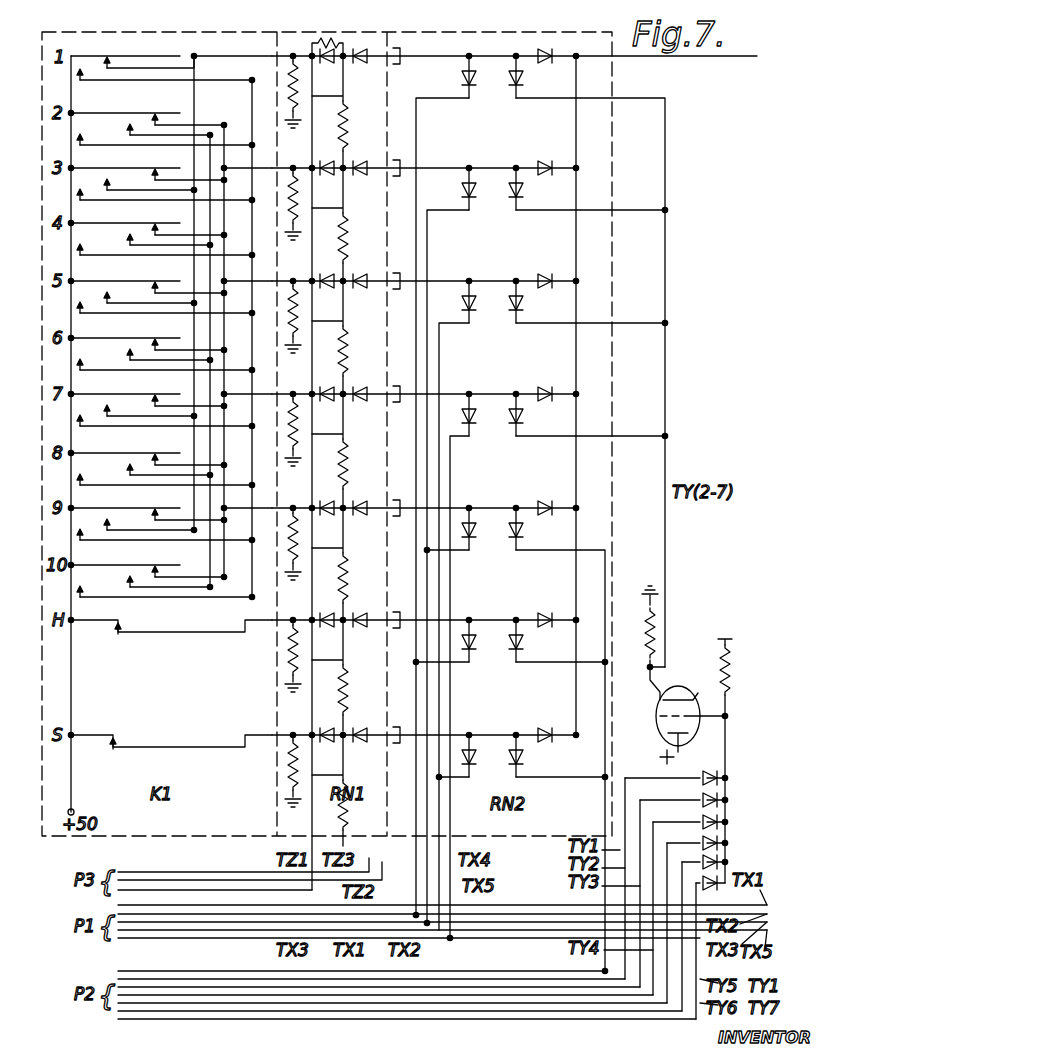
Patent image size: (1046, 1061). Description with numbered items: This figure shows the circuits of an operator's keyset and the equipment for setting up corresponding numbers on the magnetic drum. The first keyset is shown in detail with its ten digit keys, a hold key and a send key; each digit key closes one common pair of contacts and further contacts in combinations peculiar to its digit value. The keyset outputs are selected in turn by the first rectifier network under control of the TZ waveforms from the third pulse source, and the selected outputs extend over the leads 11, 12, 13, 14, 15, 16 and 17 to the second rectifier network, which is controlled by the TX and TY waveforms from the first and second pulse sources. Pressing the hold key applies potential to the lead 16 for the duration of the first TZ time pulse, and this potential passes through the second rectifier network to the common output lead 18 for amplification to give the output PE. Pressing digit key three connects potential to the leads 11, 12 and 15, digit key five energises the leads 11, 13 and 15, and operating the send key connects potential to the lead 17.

The lead 11 is at (438, 54).
The lead 12 is at (432, 168).
The lead 13 is at (447, 281).
The lead 14 is at (453, 394).
The lead 15 is at (450, 507).
The lead 16 is at (462, 620).
The lead 17 is at (462, 735).
The lead 18 is at (580, 54).